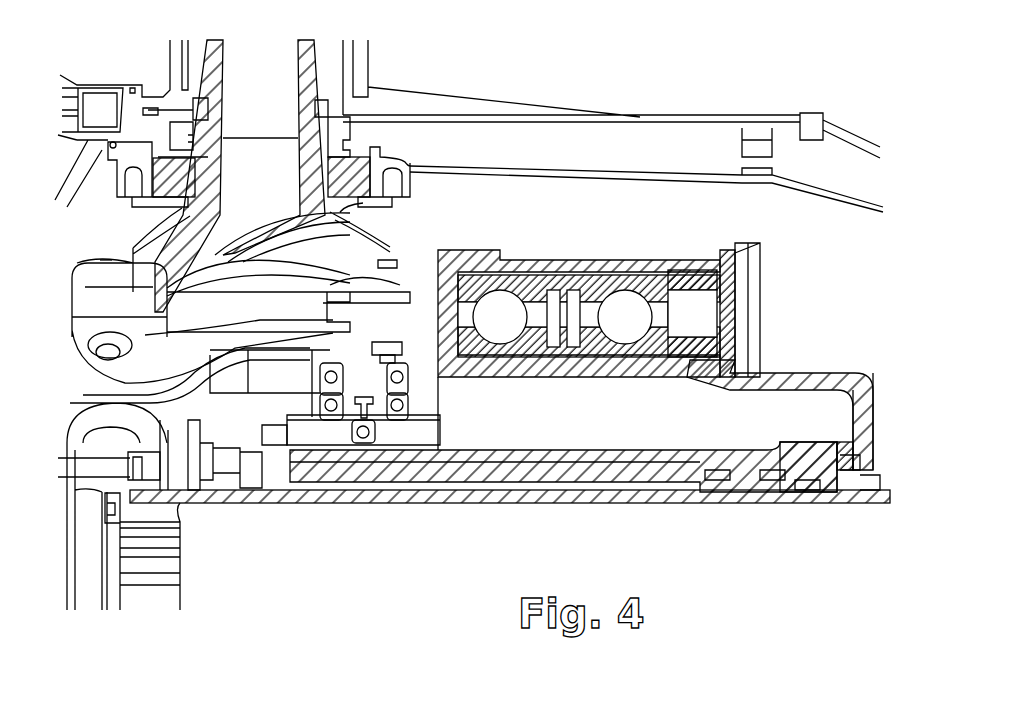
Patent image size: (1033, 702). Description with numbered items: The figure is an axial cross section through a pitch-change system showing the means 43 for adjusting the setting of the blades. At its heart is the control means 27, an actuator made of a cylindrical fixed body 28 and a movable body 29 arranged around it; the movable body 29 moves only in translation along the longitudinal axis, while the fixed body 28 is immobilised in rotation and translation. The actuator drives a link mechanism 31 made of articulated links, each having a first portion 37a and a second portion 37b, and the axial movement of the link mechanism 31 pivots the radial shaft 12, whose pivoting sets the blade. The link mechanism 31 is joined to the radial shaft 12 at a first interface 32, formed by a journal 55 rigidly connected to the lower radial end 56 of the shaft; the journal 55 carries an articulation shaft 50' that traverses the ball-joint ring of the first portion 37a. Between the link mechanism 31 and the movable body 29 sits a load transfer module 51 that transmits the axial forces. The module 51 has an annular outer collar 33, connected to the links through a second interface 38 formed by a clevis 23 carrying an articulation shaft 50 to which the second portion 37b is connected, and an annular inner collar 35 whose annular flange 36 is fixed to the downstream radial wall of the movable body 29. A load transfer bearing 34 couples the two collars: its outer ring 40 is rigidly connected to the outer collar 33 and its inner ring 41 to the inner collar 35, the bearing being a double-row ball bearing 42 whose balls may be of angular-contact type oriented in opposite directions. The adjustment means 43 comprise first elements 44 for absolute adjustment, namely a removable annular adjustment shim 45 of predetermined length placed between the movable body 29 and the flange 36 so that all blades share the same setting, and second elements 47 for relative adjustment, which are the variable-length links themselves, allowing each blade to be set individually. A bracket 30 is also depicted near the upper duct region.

The radial shaft 12 is at (307, 60).
The clevis 23 is at (420, 347).
The control means 27 is at (872, 340).
The fixed body 28 is at (577, 500).
The movable body 29 is at (555, 453).
The bracket 30 is at (363, 145).
The link mechanism 31 is at (103, 393).
The first interface 32 is at (52, 318).
The annular outer collar 33 is at (585, 268).
The load transfer bearing 34 is at (630, 268).
The annular inner collar 35 is at (795, 376).
The annular flange 36 is at (860, 388).
The first portion 37a is at (73, 300).
The second portion 37b is at (400, 303).
The second interface 38 is at (402, 238).
The outer ring 40 is at (540, 283).
The inner ring 41 is at (657, 342).
The double-row ball bearing 42 is at (500, 317).
The means for adjusting the setting 43 is at (542, 469).
The first elements for absolute adjustment 44 is at (847, 502).
The removable annular adjustment shim 45 is at (855, 448).
The second elements for relative adjustment 47 is at (285, 362).
The articulation shaft 50 is at (366, 453).
The articulation shaft 50' is at (73, 243).
The load transfer module 51 is at (482, 398).
The journal 55 is at (133, 363).
The lower radial end 56 is at (187, 352).